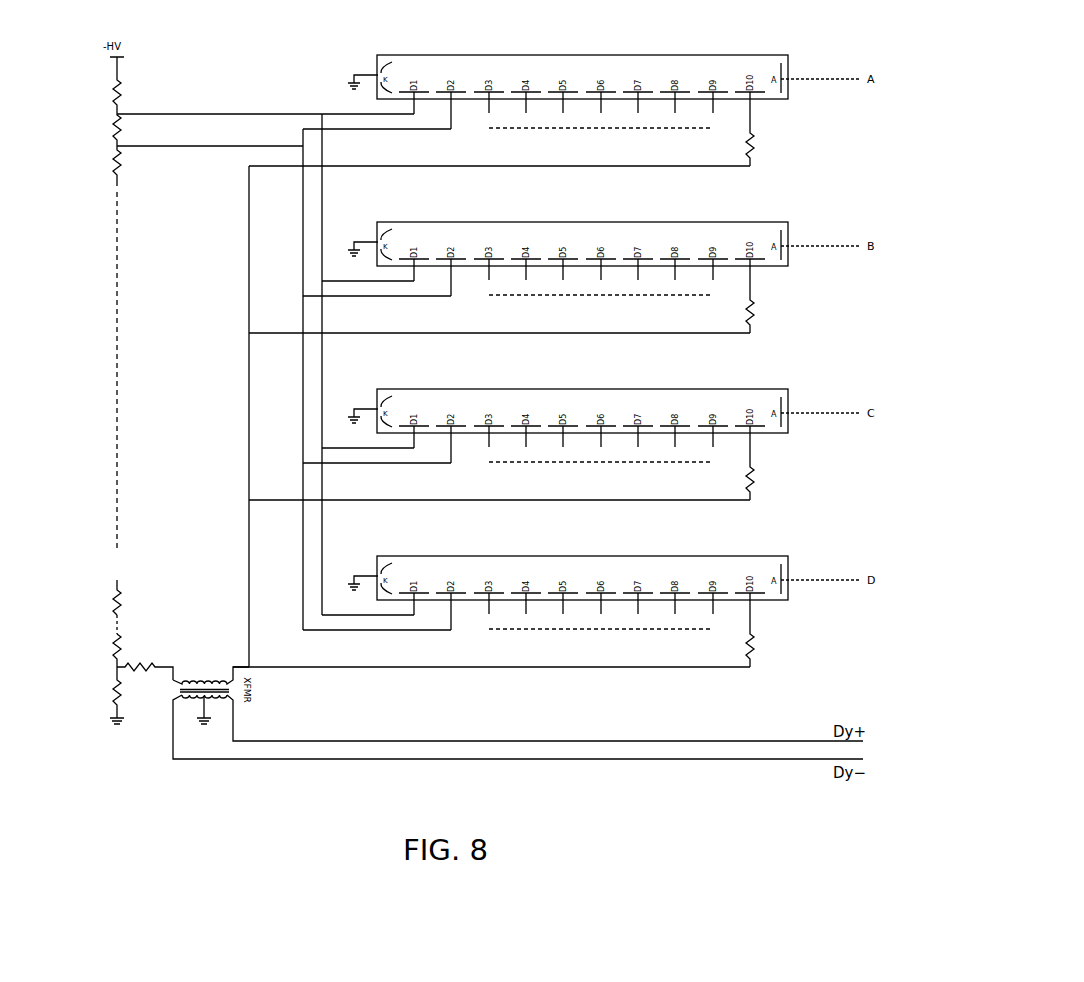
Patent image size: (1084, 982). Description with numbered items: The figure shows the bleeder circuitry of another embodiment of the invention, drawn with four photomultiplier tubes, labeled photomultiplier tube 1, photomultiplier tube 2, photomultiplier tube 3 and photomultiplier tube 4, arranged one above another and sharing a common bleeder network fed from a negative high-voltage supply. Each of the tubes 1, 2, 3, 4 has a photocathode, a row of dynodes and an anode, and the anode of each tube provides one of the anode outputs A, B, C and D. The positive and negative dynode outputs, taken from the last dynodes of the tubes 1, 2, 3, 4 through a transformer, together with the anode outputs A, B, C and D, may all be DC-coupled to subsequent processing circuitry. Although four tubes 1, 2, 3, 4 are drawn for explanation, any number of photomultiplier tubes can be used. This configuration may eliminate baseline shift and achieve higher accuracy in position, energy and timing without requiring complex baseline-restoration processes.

The photomultiplier tube PMT1 1 is at (604, 101).
The photomultiplier tube PMT2 2 is at (604, 268).
The photomultiplier tube PMT3 3 is at (604, 435).
The photomultiplier tube PMT4 4 is at (604, 602).